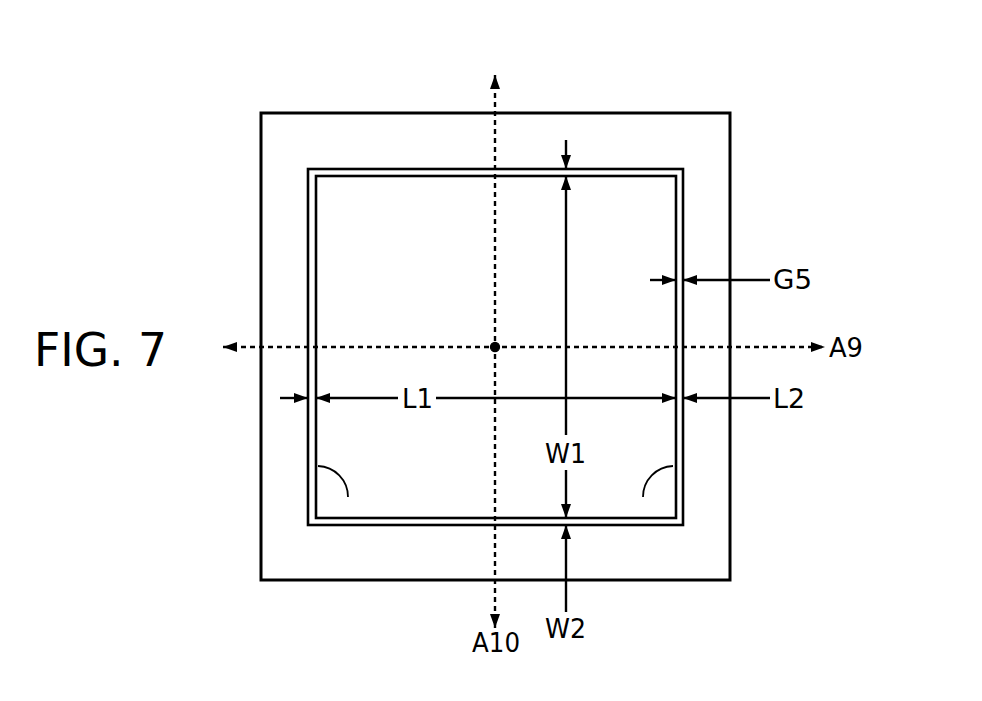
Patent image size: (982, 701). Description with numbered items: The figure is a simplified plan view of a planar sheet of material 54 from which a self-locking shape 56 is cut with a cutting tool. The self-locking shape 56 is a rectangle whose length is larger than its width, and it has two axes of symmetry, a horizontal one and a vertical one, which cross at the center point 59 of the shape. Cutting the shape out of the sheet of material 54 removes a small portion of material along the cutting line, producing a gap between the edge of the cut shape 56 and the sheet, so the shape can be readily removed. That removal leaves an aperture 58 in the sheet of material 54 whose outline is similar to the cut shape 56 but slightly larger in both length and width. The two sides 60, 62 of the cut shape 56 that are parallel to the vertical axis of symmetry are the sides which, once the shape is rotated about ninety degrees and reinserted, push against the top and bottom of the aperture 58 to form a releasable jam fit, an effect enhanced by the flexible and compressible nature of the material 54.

The planar sheet of material 54 is at (719, 146).
The self-locking shape 56 is at (644, 234).
The aperture 58 is at (305, 272).
The center point 59 is at (495, 347).
The first side 60 is at (643, 497).
The second side 62 is at (348, 497).